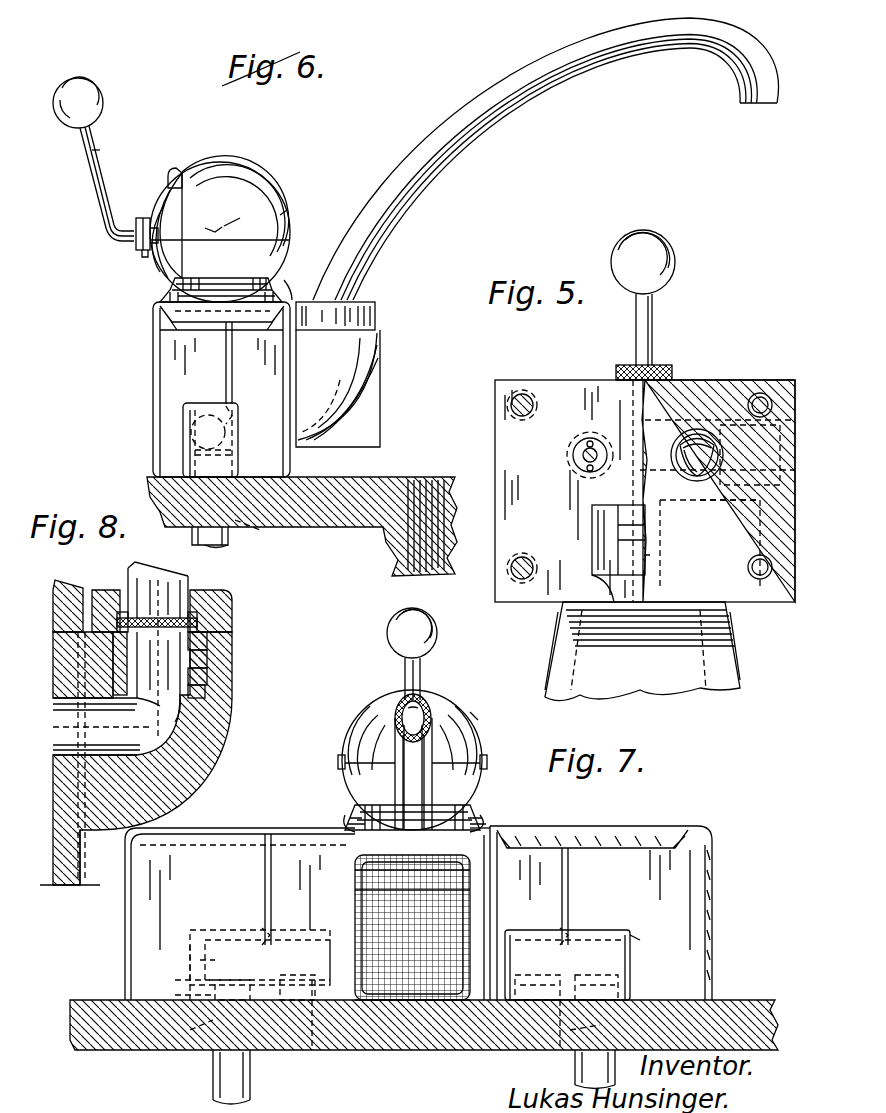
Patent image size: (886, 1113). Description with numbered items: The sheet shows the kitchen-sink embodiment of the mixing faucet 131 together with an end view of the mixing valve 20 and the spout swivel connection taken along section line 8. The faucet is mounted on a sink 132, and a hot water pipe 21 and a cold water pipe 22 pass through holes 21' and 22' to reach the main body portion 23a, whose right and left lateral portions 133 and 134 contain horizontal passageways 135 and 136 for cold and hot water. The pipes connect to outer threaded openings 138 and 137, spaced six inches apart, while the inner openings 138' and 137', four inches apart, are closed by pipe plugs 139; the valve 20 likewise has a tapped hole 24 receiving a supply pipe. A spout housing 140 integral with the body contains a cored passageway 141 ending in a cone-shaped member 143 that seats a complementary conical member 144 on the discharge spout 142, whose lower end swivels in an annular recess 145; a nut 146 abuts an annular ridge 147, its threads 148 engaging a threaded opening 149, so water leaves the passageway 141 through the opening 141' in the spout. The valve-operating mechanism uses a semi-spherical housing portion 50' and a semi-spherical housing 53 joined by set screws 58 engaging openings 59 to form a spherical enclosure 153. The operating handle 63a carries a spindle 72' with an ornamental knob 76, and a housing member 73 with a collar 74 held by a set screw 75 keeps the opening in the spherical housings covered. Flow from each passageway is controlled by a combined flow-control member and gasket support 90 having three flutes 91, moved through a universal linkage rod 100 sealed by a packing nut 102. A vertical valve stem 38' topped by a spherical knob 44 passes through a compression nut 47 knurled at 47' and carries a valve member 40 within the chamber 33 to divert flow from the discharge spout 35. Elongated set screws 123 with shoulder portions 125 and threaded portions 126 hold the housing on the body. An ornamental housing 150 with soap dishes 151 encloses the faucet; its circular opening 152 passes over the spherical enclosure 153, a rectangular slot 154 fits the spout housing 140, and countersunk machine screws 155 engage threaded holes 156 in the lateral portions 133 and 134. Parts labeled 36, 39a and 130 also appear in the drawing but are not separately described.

In FIG. 7, the section line 8 is at (445, 800).
In FIG. 5, the mixing valve 20 is at (672, 365).
In FIG. 6, the hot water pipe 21 is at (224, 547).
In FIG. 7, the hot water pipe 21 is at (250, 1077).
In FIG. 6, the hole 21' is at (264, 541).
In FIG. 7, the hole 21' is at (179, 1053).
In FIG. 7, the cold water pipe 22 is at (572, 1069).
In FIG. 7, the hole 22' is at (545, 1054).
In FIG. 6, the main body portion 23a is at (258, 385).
In FIG. 8, the main body portion 23a is at (70, 885).
In FIG. 7, the main body portion 23a is at (497, 905).
In FIG. 5, the tapped hole 24 is at (733, 515).
In FIG. 5, the chamber 33 is at (592, 552).
In FIG. 5, the discharge spout 35 is at (640, 680).
In FIG. 5, the bore 36 is at (700, 690).
In FIG. 5, the valve stem 38' is at (666, 324).
In FIG. 6, the collar 39a is at (292, 270).
In FIG. 8, the collar 39a is at (55, 585).
In FIG. 7, the collar 39a is at (330, 815).
In FIG. 5, the valve member 40 is at (620, 505).
In FIG. 5, the spherical knob 44 is at (672, 250).
In FIG. 5, the compression nut 47 is at (656, 356).
In FIG. 5, the knurled portion 47' is at (631, 355).
In FIG. 6, the semi-spherical housing portion 50' is at (220, 271).
In FIG. 7, the semi-spherical housing portion 50' is at (412, 796).
In FIG. 6, the semi-spherical housing 53 is at (225, 162).
In FIG. 7, the semi-spherical housing 53 is at (360, 732).
In FIG. 6, the set screws 58 is at (235, 212).
In FIG. 7, the set screws 58 is at (330, 755).
In FIG. 6, the openings 59 is at (218, 230).
In FIG. 6, the operating handle 63a is at (89, 186).
In FIG. 6, the handle arm 72' is at (108, 183).
In FIG. 7, the handle arm 72' is at (431, 678).
In FIG. 6, the housing member 73 is at (173, 168).
In FIG. 6, the collar 74 is at (140, 218).
In FIG. 6, the set screw 75 is at (145, 257).
In FIG. 6, the ornamental knob 76 is at (104, 103).
In FIG. 7, the ornamental knob 76 is at (387, 630).
In FIG. 5, the combined flow-control member and gasket support 90 is at (597, 438).
In FIG. 5, the flutes 91 is at (672, 478).
In FIG. 5, the universal linkage rod 100 is at (575, 450).
In FIG. 5, the threaded packing nut 102 is at (572, 462).
In FIG. 5, the elongated set screws 123 is at (742, 382).
In FIG. 5, the elongated shoulder portion 125 is at (528, 395).
In FIG. 5, the elongated threaded portion 126 is at (767, 395).
In FIG. 6, the inner housing 130 is at (240, 435).
In FIG. 6, the mixing faucet 131 is at (288, 206).
In FIG. 7, the mixing faucet 131 is at (482, 748).
In FIG. 6, the sink 132 is at (355, 477).
In FIG. 7, the sink 132 is at (95, 1050).
In FIG. 7, the right hand lateral portion 133 is at (600, 935).
In FIG. 7, the left hand lateral portion 134 is at (228, 918).
In FIG. 7, the horizontal passageway 135 is at (642, 940).
In FIG. 6, the horizontal passageway 136 is at (205, 415).
In FIG. 7, the horizontal passageway 136 is at (190, 950).
In FIG. 7, the outer threaded opening 137 is at (628, 977).
In FIG. 7, the inner threaded opening 137' is at (537, 972).
In FIG. 6, the outer threaded opening 138 is at (237, 463).
In FIG. 7, the outer threaded opening 138 is at (229, 987).
In FIG. 7, the inner threaded opening 138' is at (176, 973).
In FIG. 7, the pipe plug 139 is at (318, 1052).
In FIG. 6, the spout housing 140 is at (320, 396).
In FIG. 8, the spout housing 140 is at (232, 740).
In FIG. 7, the spout housing 140 is at (404, 894).
In FIG. 8, the passageway 141 is at (101, 726).
In FIG. 8, the opening 141' is at (148, 555).
In FIG. 7, the opening 141' is at (387, 752).
In FIG. 6, the discharge spout 142 is at (418, 170).
In FIG. 8, the discharge spout 142 is at (160, 568).
In FIG. 7, the discharge spout 142 is at (432, 745).
In FIG. 8, the cone-shaped member 143 is at (200, 716).
In FIG. 8, the conical-shaped member 144 is at (207, 658).
In FIG. 8, the annular recess 145 is at (205, 690).
In FIG. 6, the nut 146 is at (372, 298).
In FIG. 8, the nut 146 is at (225, 598).
In FIG. 8, the annular ridge 147 is at (197, 620).
In FIG. 8, the threads 148 is at (207, 640).
In FIG. 8, the threaded opening 149 is at (207, 676).
In FIG. 8, the ornamental housing 150 is at (80, 590).
In FIG. 7, the ornamental housing 150 is at (712, 855).
In FIG. 7, the soap dishes 151 is at (195, 850).
In FIG. 7, the circular opening 152 is at (485, 815).
In FIG. 7, the spherical enclosure 153 is at (440, 705).
In FIG. 7, the rectangular slot 154 is at (362, 990).
In FIG. 7, the countersunk machine screws 155 is at (262, 880).
In FIG. 6, the threaded holes 156 is at (236, 415).
In FIG. 7, the threaded holes 156 is at (262, 942).